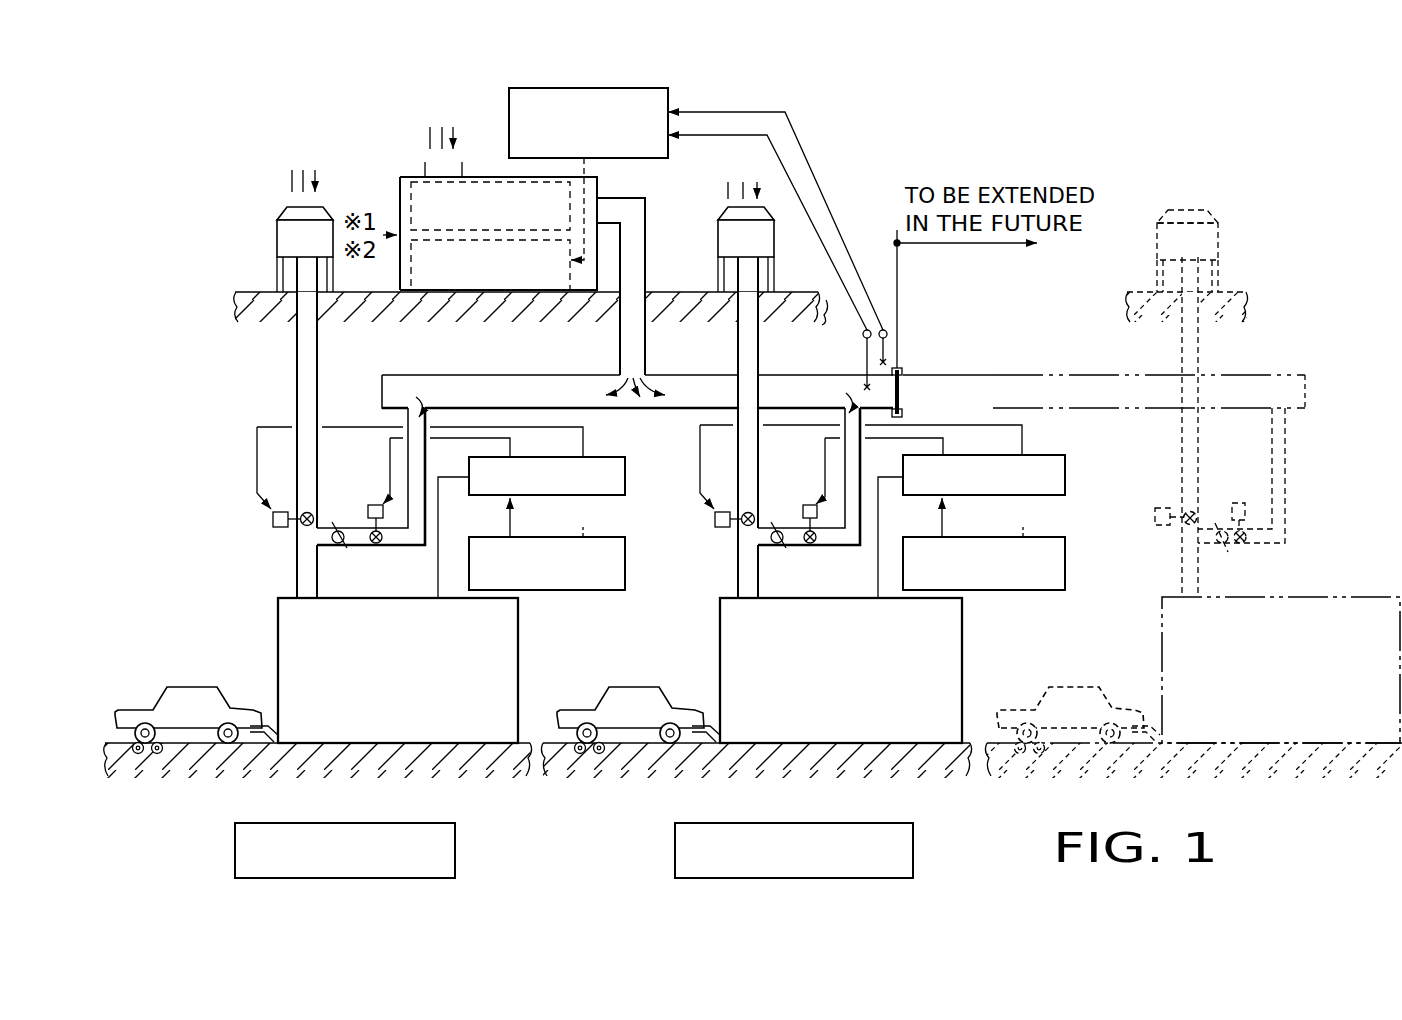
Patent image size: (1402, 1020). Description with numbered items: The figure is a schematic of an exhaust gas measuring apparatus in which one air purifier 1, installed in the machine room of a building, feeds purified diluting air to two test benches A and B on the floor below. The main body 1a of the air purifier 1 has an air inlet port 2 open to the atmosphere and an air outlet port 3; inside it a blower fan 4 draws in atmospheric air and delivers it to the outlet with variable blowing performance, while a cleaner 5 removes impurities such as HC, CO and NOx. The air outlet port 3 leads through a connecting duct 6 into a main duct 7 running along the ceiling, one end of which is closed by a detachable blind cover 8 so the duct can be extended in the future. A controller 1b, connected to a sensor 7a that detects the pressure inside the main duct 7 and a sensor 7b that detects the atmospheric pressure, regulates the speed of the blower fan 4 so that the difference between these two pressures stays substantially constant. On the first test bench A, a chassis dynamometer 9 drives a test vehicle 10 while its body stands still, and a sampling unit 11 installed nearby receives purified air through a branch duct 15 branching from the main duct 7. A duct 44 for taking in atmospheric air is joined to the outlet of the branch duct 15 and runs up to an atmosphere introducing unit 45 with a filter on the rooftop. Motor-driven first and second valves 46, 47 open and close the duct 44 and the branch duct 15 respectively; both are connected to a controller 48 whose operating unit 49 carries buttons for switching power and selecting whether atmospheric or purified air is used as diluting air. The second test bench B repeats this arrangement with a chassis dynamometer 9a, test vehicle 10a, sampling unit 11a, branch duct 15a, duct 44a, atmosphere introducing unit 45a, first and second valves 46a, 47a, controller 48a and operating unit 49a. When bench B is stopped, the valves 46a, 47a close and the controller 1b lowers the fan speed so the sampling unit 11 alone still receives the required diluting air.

The air purifier 1 is at (400, 165).
The main body 1a is at (400, 195).
The controller 1b is at (656, 86).
The air inlet port 2 is at (463, 162).
The air outlet port 3 is at (602, 212).
The blower fan 4 is at (437, 292).
The cleaner 5 is at (490, 177).
The connecting duct 6 is at (647, 248).
The main duct 7 is at (569, 376).
The sensor 7a is at (864, 339).
The sensor 7b is at (888, 332).
The blind cover 8 is at (901, 388).
The chassis dynamometer 9 is at (140, 756).
The chassis dynamometer 9a is at (580, 756).
The test vehicle 10 is at (190, 687).
The test vehicle 10a is at (645, 687).
The sampling unit 11 is at (520, 646).
The sampling unit 11a is at (964, 650).
The branch duct 15 is at (428, 460).
The branch duct 15a is at (845, 456).
The duct 44 is at (297, 364).
The duct 44a is at (738, 356).
The atmosphere introducing unit 45 is at (277, 236).
The atmosphere introducing unit 45a is at (776, 240).
The first valve 46 is at (276, 528).
The first valve 46a is at (716, 528).
The second valve 47 is at (370, 506).
The second valve 47a is at (804, 506).
The controller 48 is at (627, 477).
The controller 48a is at (1067, 477).
The operating unit 49 is at (626, 586).
The operating unit 49a is at (1067, 558).
The first test bench A is at (243, 779).
The second test bench B is at (809, 781).